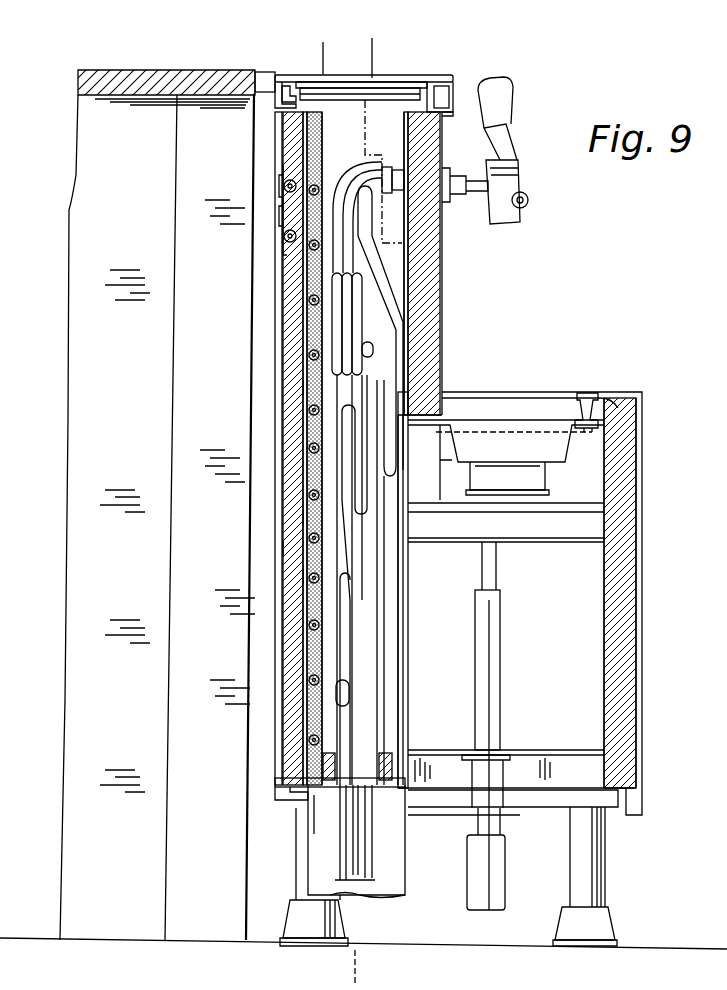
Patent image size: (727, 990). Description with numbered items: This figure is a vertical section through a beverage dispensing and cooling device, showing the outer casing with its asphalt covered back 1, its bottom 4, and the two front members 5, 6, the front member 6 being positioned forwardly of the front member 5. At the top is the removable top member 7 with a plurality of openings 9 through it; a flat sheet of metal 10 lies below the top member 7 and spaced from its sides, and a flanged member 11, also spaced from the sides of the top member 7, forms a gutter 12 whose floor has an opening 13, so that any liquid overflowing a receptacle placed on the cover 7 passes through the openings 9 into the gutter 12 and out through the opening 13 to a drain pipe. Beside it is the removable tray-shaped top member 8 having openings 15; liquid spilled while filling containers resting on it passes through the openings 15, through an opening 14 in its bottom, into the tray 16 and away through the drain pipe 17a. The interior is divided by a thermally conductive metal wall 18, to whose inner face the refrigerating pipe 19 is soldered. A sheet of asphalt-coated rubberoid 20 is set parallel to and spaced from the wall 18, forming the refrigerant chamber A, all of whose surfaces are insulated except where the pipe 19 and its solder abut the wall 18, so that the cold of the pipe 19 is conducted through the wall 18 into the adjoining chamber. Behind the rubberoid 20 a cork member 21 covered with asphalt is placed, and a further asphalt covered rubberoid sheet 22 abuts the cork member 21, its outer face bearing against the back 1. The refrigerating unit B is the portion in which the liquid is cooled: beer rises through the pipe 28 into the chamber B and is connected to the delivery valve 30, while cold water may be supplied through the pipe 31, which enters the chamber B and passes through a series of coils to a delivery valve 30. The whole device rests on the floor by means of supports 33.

The back 1 is at (283, 152).
The bottom 4 is at (553, 814).
The front member 5 is at (430, 348).
The front member 6 is at (638, 604).
The removable top member 7 is at (292, 80).
The removable tray-shaped top member 8 is at (540, 432).
The openings 9 is at (362, 96).
The flat sheet of metal 10 is at (324, 102).
The flanged member 11 is at (374, 56).
The gutter 12 is at (275, 104).
The opening 13 is at (443, 127).
The opening 14 is at (478, 492).
The openings 15 is at (510, 468).
The tray 16 is at (556, 532).
The drain pipe 17a is at (485, 568).
The metal wall 18 is at (305, 388).
The refrigerating pipe 19 is at (283, 236).
The sheet of rubberoid 20 is at (302, 517).
The cork member 21 is at (290, 548).
The sheet of rubberoid 22 is at (300, 576).
The beer pipe 28 is at (343, 706).
The delivery valve 30 is at (512, 188).
The pipe 31 is at (358, 302).
The supports 33 is at (300, 856).
The refrigerant chamber A is at (325, 418).
The refrigerating unit B is at (392, 278).